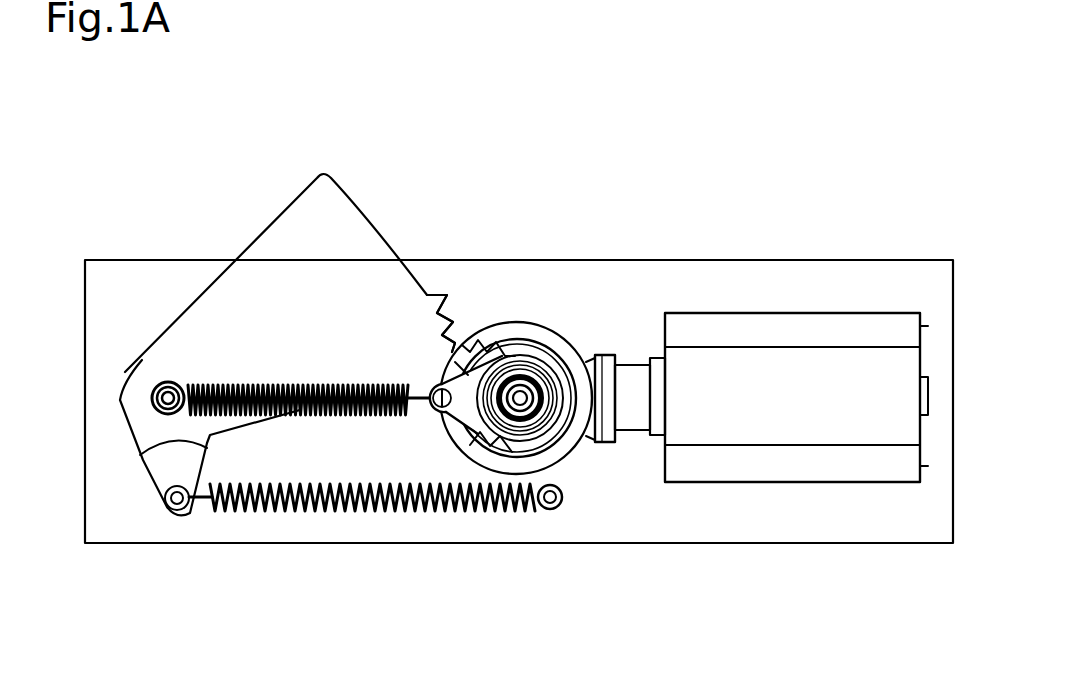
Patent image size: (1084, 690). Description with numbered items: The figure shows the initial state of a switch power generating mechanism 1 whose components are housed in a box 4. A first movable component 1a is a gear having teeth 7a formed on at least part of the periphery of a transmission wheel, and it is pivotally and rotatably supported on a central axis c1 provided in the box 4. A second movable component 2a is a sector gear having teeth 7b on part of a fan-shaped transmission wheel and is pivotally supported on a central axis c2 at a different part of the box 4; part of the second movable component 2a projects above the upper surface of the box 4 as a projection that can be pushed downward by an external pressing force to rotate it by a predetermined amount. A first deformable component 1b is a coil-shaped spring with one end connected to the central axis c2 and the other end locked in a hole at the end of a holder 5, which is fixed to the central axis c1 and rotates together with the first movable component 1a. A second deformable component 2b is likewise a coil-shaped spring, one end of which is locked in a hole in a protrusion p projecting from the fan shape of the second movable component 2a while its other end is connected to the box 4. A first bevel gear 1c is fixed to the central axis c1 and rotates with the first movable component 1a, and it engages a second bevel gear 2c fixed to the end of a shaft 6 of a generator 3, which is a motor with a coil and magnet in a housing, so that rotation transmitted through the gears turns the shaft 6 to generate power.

The switch power generating mechanism 1 is at (717, 178).
The first movable component 1a is at (498, 353).
The first deformable component 1b is at (225, 384).
The first bevel gear 1c is at (558, 340).
The second movable component 2a is at (307, 230).
The second deformable component 2b is at (272, 513).
The second bevel gear 2c is at (588, 422).
The generator 3 is at (802, 483).
The box 4 is at (913, 543).
The holder 5 is at (467, 408).
The shaft 6 is at (630, 363).
The teeth 7a is at (472, 432).
The teeth 7b is at (445, 295).
The central axis c1 is at (517, 408).
The central axis c2 is at (155, 386).
The protrusion p is at (170, 517).